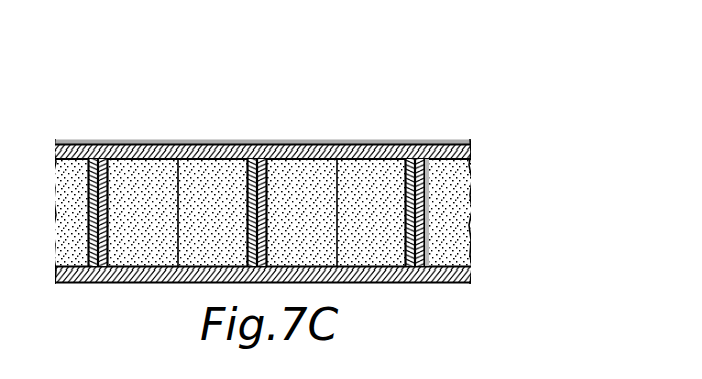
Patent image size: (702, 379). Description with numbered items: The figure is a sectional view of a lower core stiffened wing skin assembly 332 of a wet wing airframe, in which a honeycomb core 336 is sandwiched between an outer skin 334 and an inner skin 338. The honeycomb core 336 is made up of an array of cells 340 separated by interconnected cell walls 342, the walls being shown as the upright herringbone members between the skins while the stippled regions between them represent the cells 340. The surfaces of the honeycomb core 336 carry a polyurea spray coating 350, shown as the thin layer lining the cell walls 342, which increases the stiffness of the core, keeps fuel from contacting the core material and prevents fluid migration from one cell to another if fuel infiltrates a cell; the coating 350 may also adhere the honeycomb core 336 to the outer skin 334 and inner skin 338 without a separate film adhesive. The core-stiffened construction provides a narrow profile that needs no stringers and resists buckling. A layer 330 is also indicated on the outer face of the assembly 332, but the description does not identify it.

The top coating layer 330 is at (90, 143).
The lower core stiffened wing skin assembly 332 is at (292, 178).
The outer skin 334 is at (410, 283).
The honeycomb core 336 is at (418, 222).
The inner skin 338 is at (358, 157).
The cells 340 is at (148, 172).
The cell walls 342 is at (260, 158).
The polyurea spray coating 350 is at (428, 186).